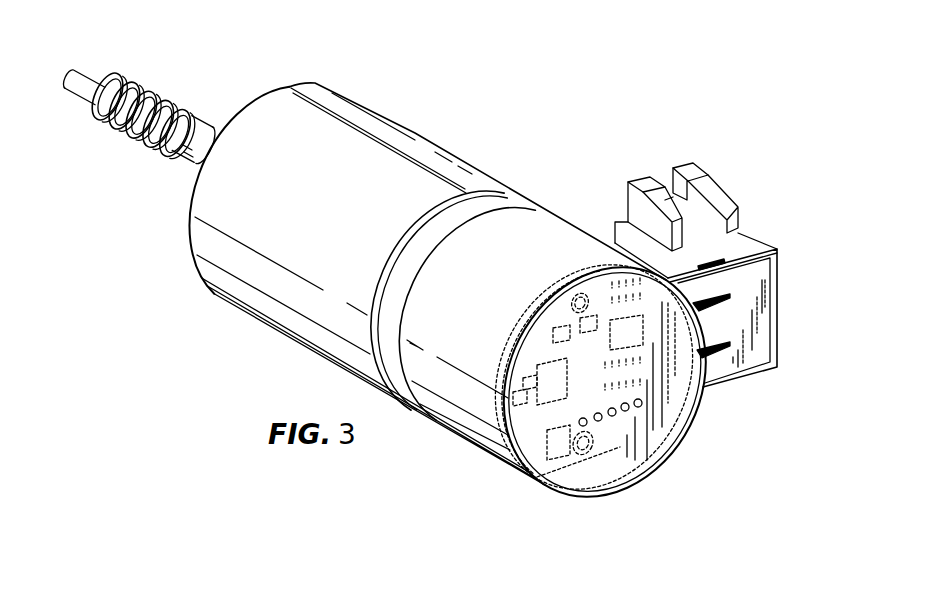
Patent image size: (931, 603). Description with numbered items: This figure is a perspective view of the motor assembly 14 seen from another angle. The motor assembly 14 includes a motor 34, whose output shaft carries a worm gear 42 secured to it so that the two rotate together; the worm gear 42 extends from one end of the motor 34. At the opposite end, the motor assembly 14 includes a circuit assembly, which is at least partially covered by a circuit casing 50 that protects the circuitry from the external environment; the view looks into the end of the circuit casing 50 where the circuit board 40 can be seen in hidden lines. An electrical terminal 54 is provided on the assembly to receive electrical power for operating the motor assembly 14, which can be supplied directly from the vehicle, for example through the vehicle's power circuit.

The motor assembly 14 is at (513, 84).
The motor 34 is at (338, 137).
The worm gear 42 is at (148, 92).
The circuit casing 50 is at (545, 237).
The circuit board 40 is at (552, 460).
The electrical terminal 54 is at (748, 242).